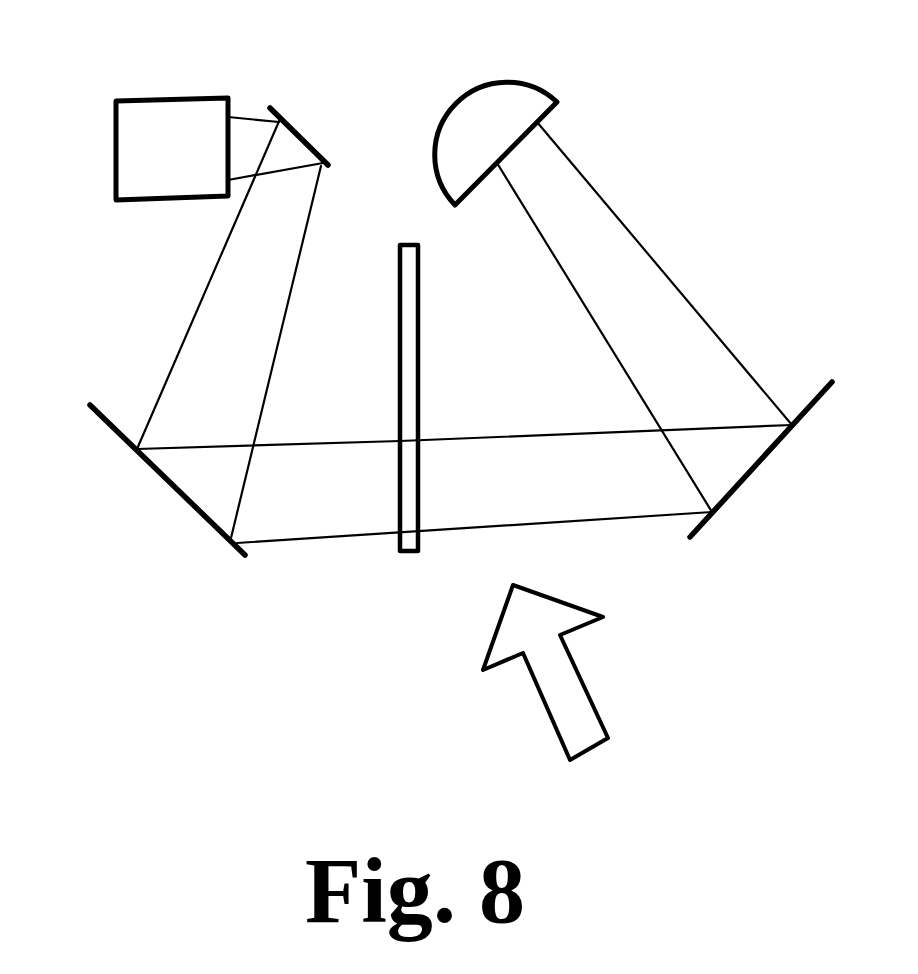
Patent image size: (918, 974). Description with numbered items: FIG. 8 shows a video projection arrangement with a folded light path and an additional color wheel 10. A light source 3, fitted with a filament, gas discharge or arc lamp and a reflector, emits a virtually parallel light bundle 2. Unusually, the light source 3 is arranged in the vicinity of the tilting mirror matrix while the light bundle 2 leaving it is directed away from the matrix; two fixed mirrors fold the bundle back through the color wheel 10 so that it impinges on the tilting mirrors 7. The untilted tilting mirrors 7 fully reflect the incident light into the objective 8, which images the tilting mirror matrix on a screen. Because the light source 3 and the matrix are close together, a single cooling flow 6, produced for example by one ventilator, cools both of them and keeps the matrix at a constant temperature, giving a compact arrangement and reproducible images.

The light bundle 2 is at (618, 252).
The light source 3 is at (515, 100).
The cooling flow 6 is at (565, 668).
The tilting mirrors 7 is at (300, 132).
The objective 8 is at (140, 97).
The color wheel 10 is at (407, 508).